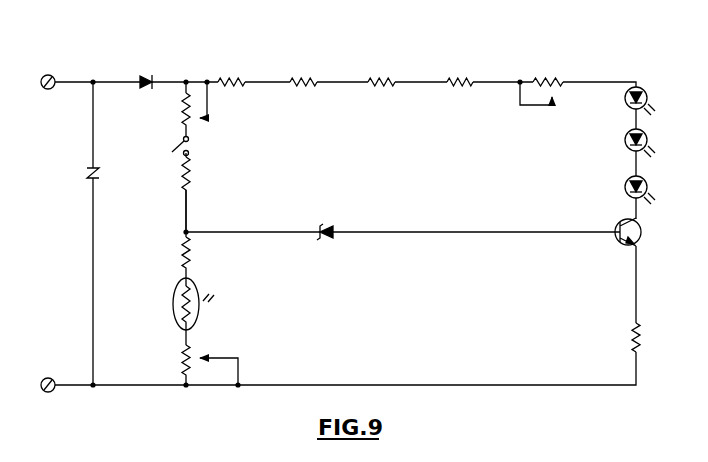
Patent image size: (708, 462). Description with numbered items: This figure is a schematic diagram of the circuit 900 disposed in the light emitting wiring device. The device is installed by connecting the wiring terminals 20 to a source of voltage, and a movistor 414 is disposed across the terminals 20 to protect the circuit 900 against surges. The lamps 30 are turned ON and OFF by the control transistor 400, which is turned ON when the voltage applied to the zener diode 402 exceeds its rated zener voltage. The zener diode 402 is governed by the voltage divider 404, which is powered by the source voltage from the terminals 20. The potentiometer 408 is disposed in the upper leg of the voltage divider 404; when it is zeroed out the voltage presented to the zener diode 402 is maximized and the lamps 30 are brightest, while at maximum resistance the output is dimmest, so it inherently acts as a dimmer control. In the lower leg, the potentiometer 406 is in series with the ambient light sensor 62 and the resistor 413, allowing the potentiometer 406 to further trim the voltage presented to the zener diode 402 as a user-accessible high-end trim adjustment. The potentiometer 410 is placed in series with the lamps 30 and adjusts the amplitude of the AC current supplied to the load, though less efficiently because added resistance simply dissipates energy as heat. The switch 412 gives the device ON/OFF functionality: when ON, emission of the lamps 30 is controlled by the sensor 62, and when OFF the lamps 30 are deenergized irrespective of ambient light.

The circuit 900 is at (345, 45).
The wiring terminals 20 is at (43, 76).
The movistor 414 is at (86, 177).
The switch 412 is at (177, 148).
The potentiometer 408 is at (205, 128).
The voltage divider 404 is at (177, 206).
The resistor 413 is at (196, 256).
The ambient light sensor 62 is at (198, 292).
The potentiometer 406 is at (197, 352).
The zener diode 402 is at (327, 225).
The potentiometer 410 is at (527, 107).
The lamps 30 is at (624, 100).
The control transistor 400 is at (622, 245).